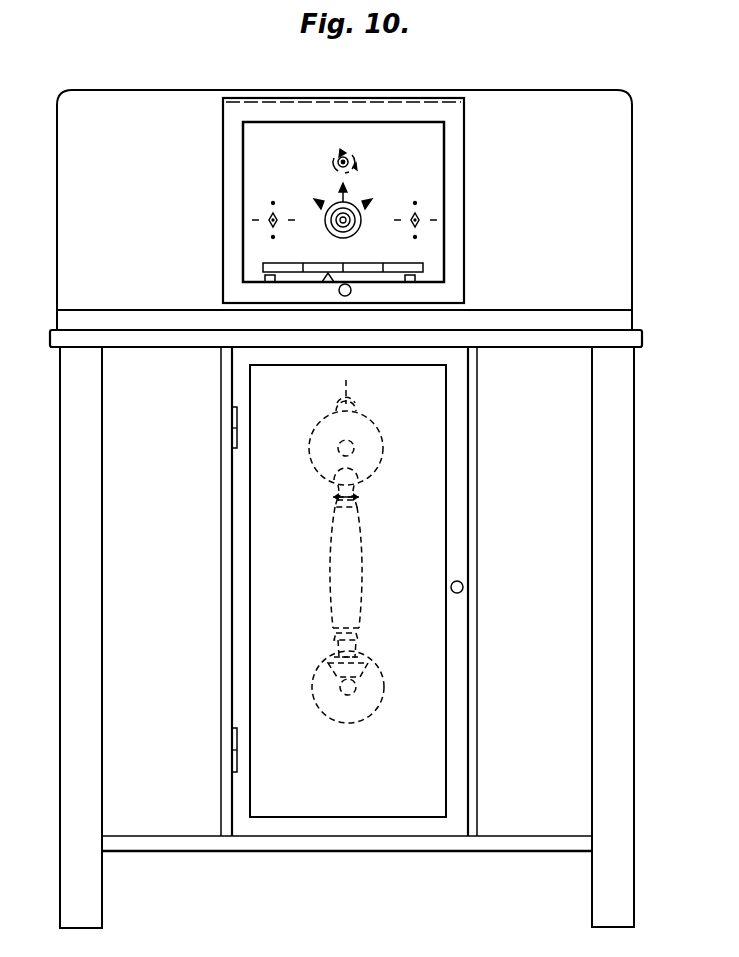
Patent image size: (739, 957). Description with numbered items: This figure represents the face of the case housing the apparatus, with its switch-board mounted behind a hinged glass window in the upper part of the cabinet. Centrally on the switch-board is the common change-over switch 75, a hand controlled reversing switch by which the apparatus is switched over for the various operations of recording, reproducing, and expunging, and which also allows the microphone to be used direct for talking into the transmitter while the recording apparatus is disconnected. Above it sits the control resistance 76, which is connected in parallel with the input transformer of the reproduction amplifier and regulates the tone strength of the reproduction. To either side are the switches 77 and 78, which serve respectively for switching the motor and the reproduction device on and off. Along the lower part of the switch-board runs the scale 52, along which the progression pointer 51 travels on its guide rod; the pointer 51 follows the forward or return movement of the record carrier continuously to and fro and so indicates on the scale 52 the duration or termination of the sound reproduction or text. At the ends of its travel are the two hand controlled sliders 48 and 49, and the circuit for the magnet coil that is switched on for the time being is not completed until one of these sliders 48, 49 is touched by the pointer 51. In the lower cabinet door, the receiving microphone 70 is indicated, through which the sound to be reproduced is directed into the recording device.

The receiving microphone 70 is at (338, 562).
The change-over switch 75 is at (352, 212).
The control resistance 76 is at (348, 158).
The switch 77 is at (270, 208).
The switch 78 is at (418, 212).
The scale 52 is at (263, 267).
The hand controlled slider 48 is at (266, 278).
The hand controlled slider 49 is at (416, 277).
The pointer 51 is at (325, 281).